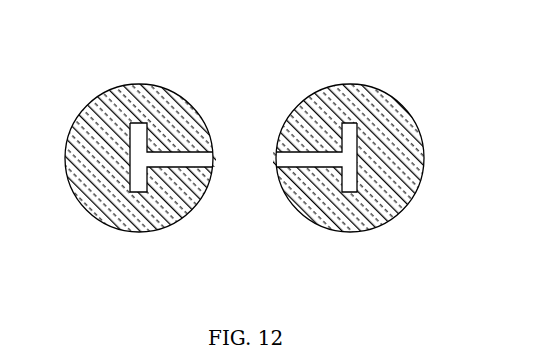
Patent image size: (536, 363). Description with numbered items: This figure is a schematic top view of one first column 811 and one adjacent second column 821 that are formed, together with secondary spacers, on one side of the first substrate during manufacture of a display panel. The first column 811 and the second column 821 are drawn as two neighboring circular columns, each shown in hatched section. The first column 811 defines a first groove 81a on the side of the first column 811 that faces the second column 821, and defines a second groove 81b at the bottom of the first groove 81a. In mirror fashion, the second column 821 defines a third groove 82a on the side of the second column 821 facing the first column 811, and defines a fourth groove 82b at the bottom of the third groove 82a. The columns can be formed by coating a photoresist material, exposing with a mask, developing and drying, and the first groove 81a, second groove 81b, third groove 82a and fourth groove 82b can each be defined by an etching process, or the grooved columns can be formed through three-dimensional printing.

The first column 811 is at (145, 98).
The first groove 81a is at (188, 147).
The second groove 81b is at (138, 193).
The second column 821 is at (345, 117).
The third groove 82a is at (295, 147).
The fourth groove 82b is at (345, 193).